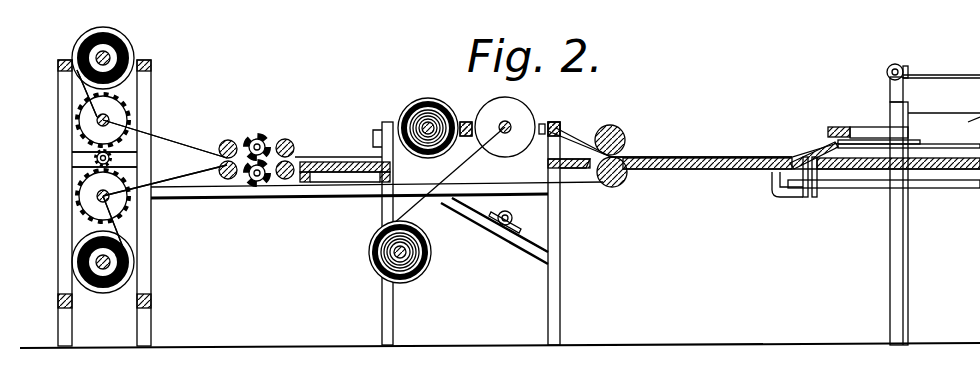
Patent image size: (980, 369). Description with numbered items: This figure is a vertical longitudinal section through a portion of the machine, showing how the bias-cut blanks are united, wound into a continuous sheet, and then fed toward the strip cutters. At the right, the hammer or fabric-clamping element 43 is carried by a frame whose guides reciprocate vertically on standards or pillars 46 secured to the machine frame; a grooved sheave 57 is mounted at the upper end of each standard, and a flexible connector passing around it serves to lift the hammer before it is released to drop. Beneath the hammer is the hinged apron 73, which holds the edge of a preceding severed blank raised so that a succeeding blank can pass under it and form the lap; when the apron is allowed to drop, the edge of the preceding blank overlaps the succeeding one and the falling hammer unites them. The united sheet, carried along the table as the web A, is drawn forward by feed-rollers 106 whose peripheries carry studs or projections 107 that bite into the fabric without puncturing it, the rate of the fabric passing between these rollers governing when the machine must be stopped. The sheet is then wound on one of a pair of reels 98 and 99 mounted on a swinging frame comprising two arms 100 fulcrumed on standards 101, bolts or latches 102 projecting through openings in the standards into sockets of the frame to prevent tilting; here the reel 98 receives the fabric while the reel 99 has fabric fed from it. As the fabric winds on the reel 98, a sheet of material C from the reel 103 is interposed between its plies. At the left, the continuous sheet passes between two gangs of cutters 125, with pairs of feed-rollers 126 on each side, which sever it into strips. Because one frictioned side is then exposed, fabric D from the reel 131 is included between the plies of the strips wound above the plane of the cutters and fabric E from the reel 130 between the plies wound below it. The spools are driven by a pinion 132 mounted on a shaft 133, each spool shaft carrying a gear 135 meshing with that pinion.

The reel 131 is at (128, 46).
The reel 130 is at (128, 263).
The gear 135 is at (82, 202).
The shaft 133 is at (112, 159).
The pinion 132 is at (97, 162).
The feed-rollers 126 is at (289, 179).
The cutters 125 is at (262, 186).
The reel 99 is at (430, 124).
The reel 98 is at (505, 127).
The arms 100 is at (547, 130).
The standards 101 is at (467, 161).
The bolts or latches 102 is at (620, 127).
The reel 103 is at (430, 263).
The feed-rollers 106 is at (627, 181).
The studs or projections 107 is at (626, 151).
The grooved sheave 57 is at (888, 68).
The standards or pillars 46 is at (908, 93).
The hammer or fabric-clamping element 43 is at (866, 118).
The hinged apron 73 is at (820, 147).
The web A is at (742, 153).
The sheet of material C is at (484, 225).
The fabric D is at (84, 90).
The fabric E is at (122, 225).